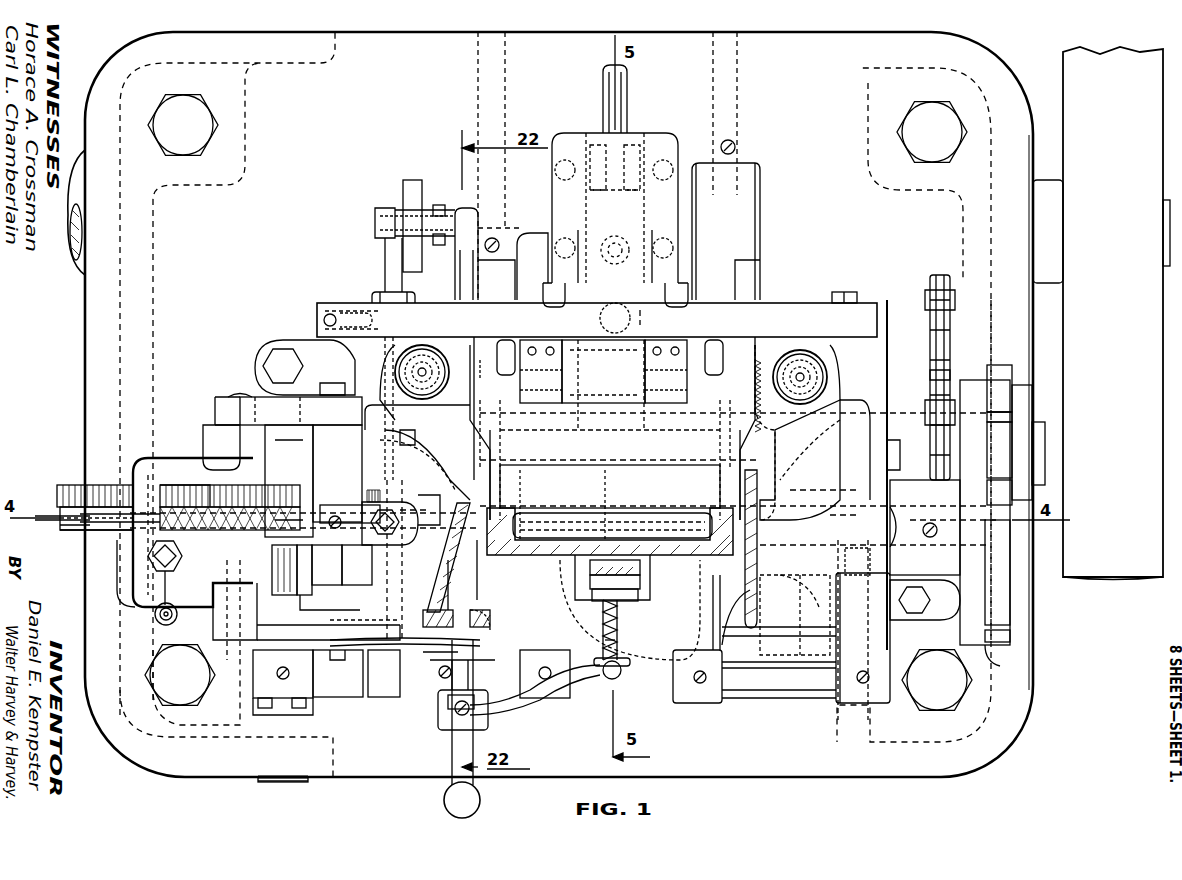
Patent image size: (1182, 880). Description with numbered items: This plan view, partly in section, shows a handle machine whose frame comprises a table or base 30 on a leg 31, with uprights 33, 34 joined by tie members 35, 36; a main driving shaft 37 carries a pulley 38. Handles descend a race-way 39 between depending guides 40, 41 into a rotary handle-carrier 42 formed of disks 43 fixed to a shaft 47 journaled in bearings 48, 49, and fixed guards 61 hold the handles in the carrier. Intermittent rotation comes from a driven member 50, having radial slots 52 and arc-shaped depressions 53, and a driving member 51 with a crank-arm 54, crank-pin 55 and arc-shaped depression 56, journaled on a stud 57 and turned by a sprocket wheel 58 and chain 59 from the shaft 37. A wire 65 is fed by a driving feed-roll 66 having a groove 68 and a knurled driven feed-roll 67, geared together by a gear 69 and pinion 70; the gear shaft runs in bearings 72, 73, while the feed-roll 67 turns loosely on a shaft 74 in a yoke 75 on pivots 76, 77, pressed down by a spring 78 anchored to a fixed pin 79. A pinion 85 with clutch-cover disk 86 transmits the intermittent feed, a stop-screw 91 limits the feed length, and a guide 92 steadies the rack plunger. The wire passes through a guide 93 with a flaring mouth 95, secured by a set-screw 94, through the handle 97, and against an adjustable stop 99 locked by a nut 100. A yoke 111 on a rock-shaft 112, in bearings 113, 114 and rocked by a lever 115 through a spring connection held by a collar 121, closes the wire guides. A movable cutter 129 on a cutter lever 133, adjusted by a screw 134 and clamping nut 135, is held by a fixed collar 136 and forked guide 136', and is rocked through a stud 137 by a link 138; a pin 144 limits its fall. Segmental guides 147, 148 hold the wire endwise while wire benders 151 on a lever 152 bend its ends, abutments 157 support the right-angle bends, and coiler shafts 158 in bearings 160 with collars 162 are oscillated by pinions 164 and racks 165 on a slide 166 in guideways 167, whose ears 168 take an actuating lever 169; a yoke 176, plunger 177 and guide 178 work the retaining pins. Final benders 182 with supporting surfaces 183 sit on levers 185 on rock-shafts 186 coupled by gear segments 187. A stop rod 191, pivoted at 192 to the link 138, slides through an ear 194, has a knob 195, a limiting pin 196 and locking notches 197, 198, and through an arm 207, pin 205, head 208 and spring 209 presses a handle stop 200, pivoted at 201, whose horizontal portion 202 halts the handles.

The table or base 30 is at (1008, 764).
The leg 31 is at (160, 262).
The upright 33 is at (360, 590).
The upright 34 is at (853, 630).
The horizontal tie member 35 is at (450, 430).
The horizontal tie member 36 is at (739, 280).
The main driving shaft 37 is at (70, 220).
The pulley 38 is at (1098, 313).
The race-way 39 is at (462, 575).
The depending guide 40 is at (425, 530).
The depending guide 41 is at (735, 560).
The rotary handle-carrier 42 is at (610, 510).
The disk 43 is at (610, 497).
The shaft 47 is at (935, 545).
The bearing 48 is at (432, 590).
The bearing 49 is at (855, 561).
The driven member 50 is at (990, 650).
The driving member 51 is at (998, 365).
The radial slot 52 is at (1014, 494).
The arc-shaped depression 53 is at (1005, 448).
The crank-arm 54 is at (1020, 416).
The crank-pin 55 is at (1015, 412).
The arc-shaped depression 56 is at (1022, 390).
The stud 57 is at (1046, 460).
The sprocket wheel 58 is at (942, 370).
The chain 59 is at (960, 318).
The fixed guard 61 is at (603, 409).
The wire 65 is at (45, 536).
The driving feed-roll 66 is at (75, 530).
The driven feed-roll 67 is at (215, 530).
The groove 68 is at (70, 510).
The gear 69 is at (92, 485).
The pinion 70 is at (295, 520).
The bearing 72 is at (170, 650).
The bearing 73 is at (205, 440).
The shaft 74 is at (238, 397).
The yoke 75 is at (215, 400).
The pivot 76 is at (340, 383).
The pivot 77 is at (338, 673).
The spring 78 is at (158, 625).
The fixed pin 79 is at (112, 522).
The pinion 85 is at (272, 563).
The interposed disk 86 is at (305, 600).
The stop-screw 91 is at (150, 560).
The guide 92 is at (125, 590).
The wire guide 93 is at (335, 516).
The set-screw 94 is at (327, 571).
The flaring entrance or mouth 95 is at (291, 571).
The handle 97 is at (535, 405).
The adjustable stop 99 is at (917, 547).
The nut 100 is at (898, 512).
The yoke 111 is at (720, 700).
The rock-shaft 112 is at (253, 680).
The bearing 113 is at (335, 697).
The bearing 114 is at (836, 700).
The lever 115 is at (283, 700).
The collar 121 is at (275, 783).
The movable cutter 129 is at (372, 605).
The cutter lever 133 is at (388, 247).
The adjusting screw 134 is at (372, 545).
The clamping nut 135 is at (355, 490).
The fixed collar 136 is at (405, 681).
The forked guide 136' is at (581, 374).
The stud 137 is at (440, 205).
The vertically movable link 138 is at (403, 180).
The pin 144 is at (415, 438).
The guide 147 is at (365, 462).
The guide 148 is at (795, 615).
The wire bender 151 is at (612, 432).
The lever 152 is at (784, 432).
The abutment 157 is at (520, 355).
The coiler shaft 158 is at (478, 355).
The bearing 160 is at (614, 374).
The collar 162 is at (440, 355).
The pinion 164 is at (840, 410).
The rack 165 is at (800, 470).
The slide 166 is at (618, 460).
The guideway 167 is at (672, 126).
The depending ear 168 is at (622, 195).
The actuating lever 169 is at (622, 100).
The yoke 176 is at (611, 281).
The plunger 177 is at (613, 262).
The guide 178 is at (632, 322).
The final bender 182 is at (770, 335).
The supporting surface 183 is at (518, 300).
The lever 185 is at (619, 232).
The rock-shaft 186 is at (738, 146).
The gear segment 187 is at (603, 371).
The stop rod 191 is at (455, 282).
The pivot 192 is at (480, 215).
The ear 194 is at (488, 607).
The handle or knob 195 is at (444, 798).
The pin 196 is at (440, 674).
The notch 197 is at (452, 730).
The notch 198 is at (629, 607).
The handle stop 200 is at (590, 572).
The pivot 201 is at (626, 601).
The horizontal portion 202 is at (612, 510).
The pin 205 is at (618, 635).
The arm 207 is at (520, 712).
The head 208 is at (605, 678).
The spring 209 is at (603, 635).